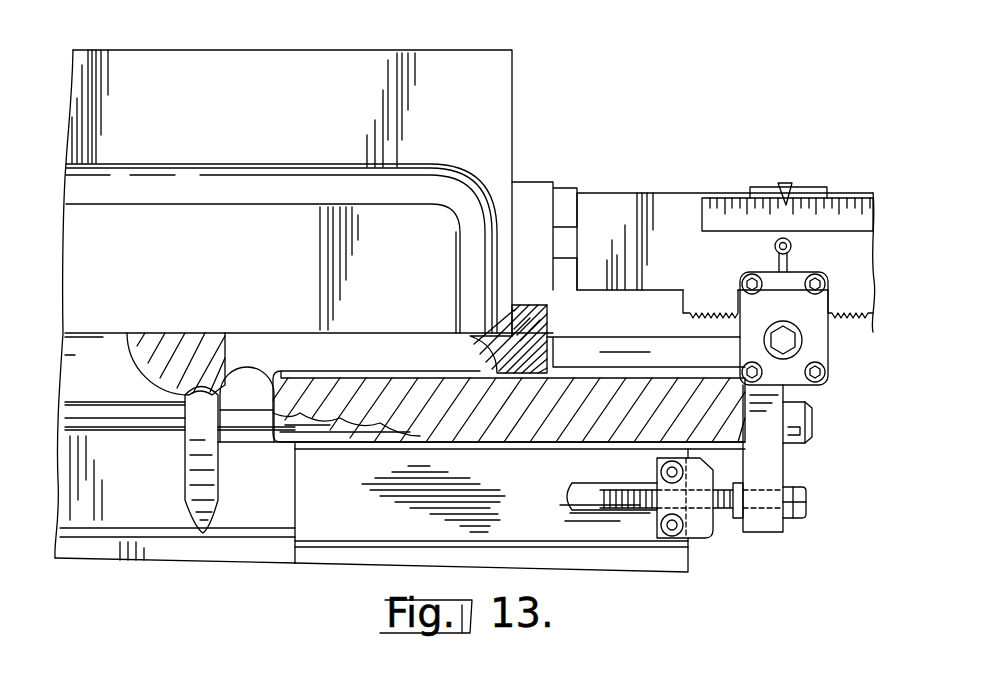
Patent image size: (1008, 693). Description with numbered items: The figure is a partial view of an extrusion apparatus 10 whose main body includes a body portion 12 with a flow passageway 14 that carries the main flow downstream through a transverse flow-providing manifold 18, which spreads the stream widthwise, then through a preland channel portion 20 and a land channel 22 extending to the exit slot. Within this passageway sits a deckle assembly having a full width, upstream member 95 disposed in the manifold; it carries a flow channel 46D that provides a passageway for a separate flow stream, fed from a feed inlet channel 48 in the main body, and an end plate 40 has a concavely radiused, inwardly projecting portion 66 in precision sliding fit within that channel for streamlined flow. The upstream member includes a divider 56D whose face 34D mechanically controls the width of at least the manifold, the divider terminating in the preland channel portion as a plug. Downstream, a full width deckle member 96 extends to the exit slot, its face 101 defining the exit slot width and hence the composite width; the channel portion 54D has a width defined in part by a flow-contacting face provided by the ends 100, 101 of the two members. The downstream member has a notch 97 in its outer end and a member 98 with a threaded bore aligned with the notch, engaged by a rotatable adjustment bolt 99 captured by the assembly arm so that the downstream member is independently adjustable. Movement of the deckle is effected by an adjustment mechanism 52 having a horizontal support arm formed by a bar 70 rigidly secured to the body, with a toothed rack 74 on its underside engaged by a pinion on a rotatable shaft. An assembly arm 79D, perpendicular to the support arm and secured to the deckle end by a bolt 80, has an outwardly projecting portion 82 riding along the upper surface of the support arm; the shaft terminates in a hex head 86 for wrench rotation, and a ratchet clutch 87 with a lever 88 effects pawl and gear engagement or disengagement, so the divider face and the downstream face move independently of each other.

The extrusion apparatus 10 is at (572, 66).
The body portion 12 is at (262, 52).
The flow passageway 14 is at (101, 356).
The manifold 18 is at (126, 388).
The channel portion 20 is at (128, 508).
The land channel 22 is at (172, 553).
The face 34D is at (187, 470).
The end plate 40 is at (568, 313).
The flow channel 46D is at (290, 350).
The feed inlet channel 48 is at (265, 186).
The adjustment mechanism 52 is at (792, 150).
The channel portion 54D is at (243, 376).
The divider 56D is at (186, 398).
The inwardly projecting portion 66 is at (470, 336).
The bar 70 is at (619, 200).
The toothed rack 74 is at (860, 312).
The assembly arm 79D is at (775, 462).
The bolt 80 is at (812, 418).
The outwardly projecting portion 82 is at (757, 190).
The hex head 86 is at (790, 328).
The ratchet clutch 87 is at (754, 265).
The lever 88 is at (793, 246).
The upstream member 95 is at (183, 336).
The downstream deckle member 96 is at (560, 538).
The notch 97 is at (568, 495).
The member 98 is at (700, 534).
The adjustment bolt 99 is at (800, 518).
The end 100 is at (263, 403).
The face 101 is at (285, 490).